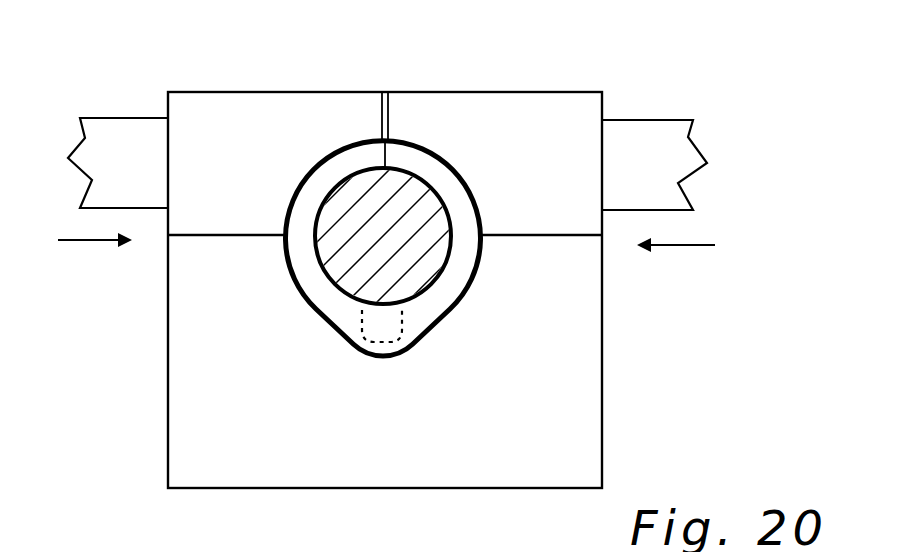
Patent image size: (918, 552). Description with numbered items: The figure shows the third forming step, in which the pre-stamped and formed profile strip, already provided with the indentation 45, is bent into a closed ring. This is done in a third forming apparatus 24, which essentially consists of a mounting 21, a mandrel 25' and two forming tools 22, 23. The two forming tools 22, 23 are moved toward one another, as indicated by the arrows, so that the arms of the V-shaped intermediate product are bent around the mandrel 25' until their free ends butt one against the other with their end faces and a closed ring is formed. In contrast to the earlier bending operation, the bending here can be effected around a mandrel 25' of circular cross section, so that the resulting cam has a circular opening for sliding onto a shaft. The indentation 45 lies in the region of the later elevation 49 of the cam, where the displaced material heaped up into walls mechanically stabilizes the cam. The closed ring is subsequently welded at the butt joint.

The mounting 21 is at (500, 443).
The forming tool 22 is at (200, 112).
The forming tool 23 is at (583, 110).
The third forming apparatus 24 is at (137, 335).
The mandrel of circular cross section 25' is at (384, 180).
The indentation 45 is at (392, 326).
The elevation 49 is at (373, 362).